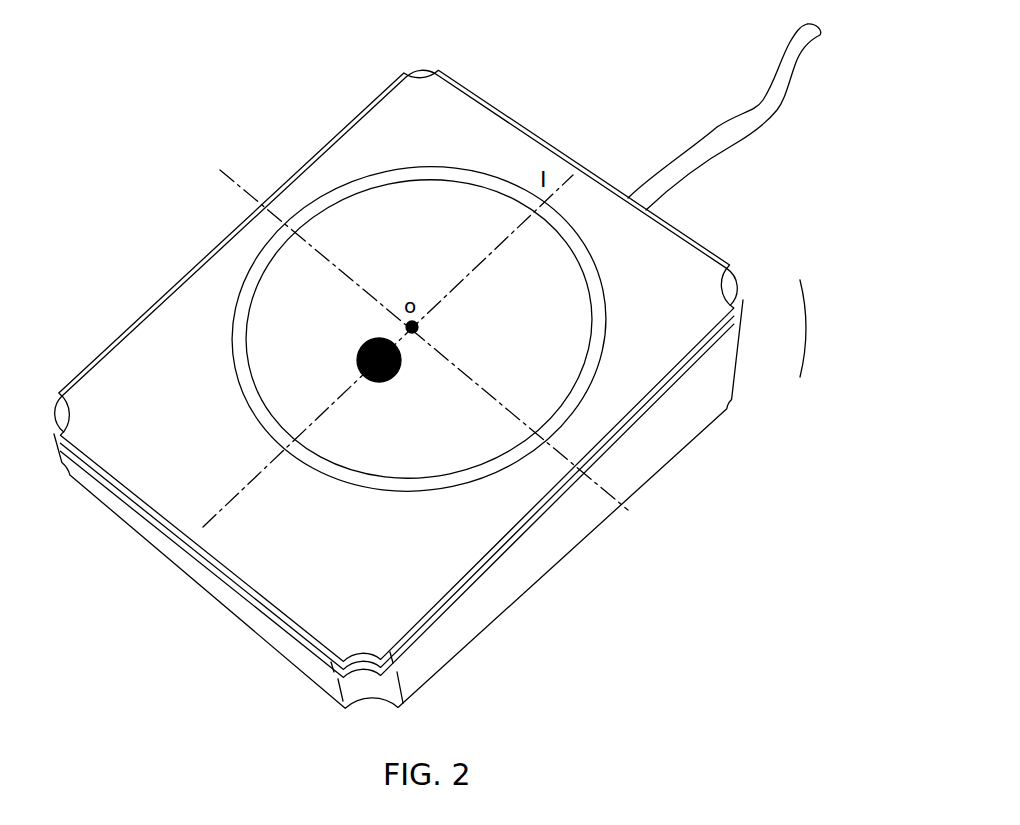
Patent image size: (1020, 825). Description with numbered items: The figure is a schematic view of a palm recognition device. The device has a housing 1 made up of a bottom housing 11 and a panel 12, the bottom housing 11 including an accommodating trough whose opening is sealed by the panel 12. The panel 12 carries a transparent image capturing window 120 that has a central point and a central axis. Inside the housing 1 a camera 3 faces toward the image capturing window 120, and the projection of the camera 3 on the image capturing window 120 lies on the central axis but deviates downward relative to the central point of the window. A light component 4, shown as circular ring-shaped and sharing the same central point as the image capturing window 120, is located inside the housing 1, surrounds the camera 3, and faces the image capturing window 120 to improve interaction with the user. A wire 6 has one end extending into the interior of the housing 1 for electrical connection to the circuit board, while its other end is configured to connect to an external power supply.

The housing 1 is at (813, 328).
The bottom housing 11 is at (703, 386).
The panel 12 is at (693, 294).
The image capturing window 120 is at (245, 273).
The light component 4 is at (243, 388).
The camera 3 is at (357, 356).
The wire 6 is at (718, 128).